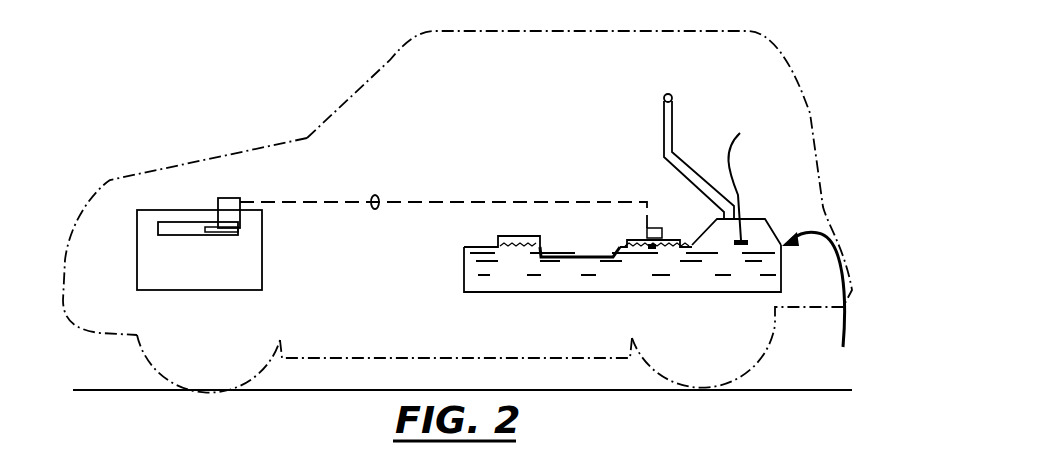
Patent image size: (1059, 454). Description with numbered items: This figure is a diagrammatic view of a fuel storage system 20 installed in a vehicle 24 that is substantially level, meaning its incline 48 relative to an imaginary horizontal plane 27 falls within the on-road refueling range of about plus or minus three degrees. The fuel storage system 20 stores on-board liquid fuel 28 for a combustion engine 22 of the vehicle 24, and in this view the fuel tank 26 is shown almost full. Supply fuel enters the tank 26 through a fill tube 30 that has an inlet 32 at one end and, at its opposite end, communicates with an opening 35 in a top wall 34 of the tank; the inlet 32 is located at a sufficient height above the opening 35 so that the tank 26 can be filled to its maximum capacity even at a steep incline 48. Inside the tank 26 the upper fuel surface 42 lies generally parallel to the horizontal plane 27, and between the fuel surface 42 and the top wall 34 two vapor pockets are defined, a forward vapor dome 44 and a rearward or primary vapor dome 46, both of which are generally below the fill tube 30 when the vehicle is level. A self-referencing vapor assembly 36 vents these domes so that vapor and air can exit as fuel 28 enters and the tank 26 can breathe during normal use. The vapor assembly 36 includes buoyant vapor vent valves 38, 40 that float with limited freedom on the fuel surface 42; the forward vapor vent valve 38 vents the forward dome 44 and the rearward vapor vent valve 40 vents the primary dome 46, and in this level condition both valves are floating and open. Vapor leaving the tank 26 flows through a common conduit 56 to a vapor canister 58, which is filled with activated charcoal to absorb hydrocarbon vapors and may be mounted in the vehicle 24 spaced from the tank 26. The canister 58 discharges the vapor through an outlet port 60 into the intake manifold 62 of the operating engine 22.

The fuel storage system 20 is at (464, 212).
The combustion engine 22 is at (215, 279).
The vehicle 24 is at (338, 110).
The fuel tank 26 is at (819, 306).
The imaginary horizontal plane 27 is at (332, 390).
The liquid fuel 28 is at (552, 283).
The fill tube 30 is at (678, 137).
The inlet 32 is at (665, 96).
The top wall 34 is at (757, 216).
The opening 35 is at (723, 212).
The vapor assembly 36 is at (608, 238).
The forward vapor vent valve 38 is at (500, 240).
The rearward vapor vent valve 40 is at (743, 177).
The upper fuel surface 42 is at (784, 240).
The forward vapor dome 44 is at (535, 245).
The primary vapor dome 46 is at (762, 228).
The incline 48 is at (130, 390).
The common conduit 56 is at (377, 196).
The vapor canister 58 is at (227, 185).
The outlet port 60 is at (240, 217).
The intake manifold 62 is at (178, 228).